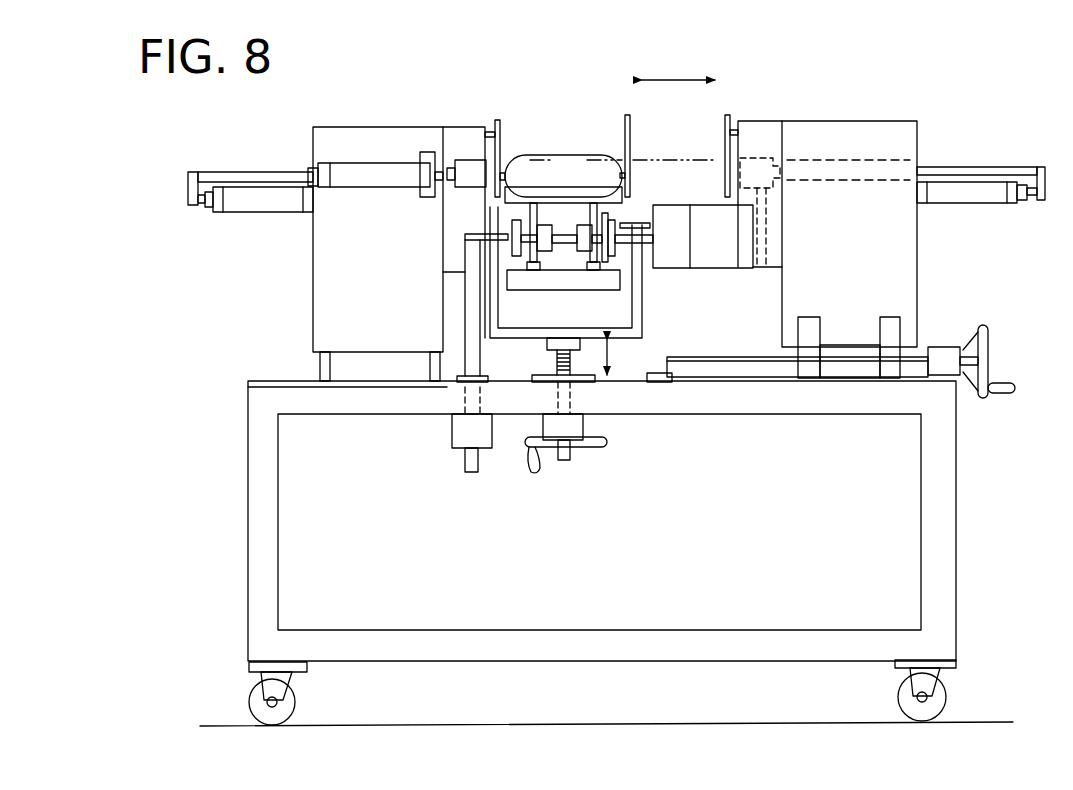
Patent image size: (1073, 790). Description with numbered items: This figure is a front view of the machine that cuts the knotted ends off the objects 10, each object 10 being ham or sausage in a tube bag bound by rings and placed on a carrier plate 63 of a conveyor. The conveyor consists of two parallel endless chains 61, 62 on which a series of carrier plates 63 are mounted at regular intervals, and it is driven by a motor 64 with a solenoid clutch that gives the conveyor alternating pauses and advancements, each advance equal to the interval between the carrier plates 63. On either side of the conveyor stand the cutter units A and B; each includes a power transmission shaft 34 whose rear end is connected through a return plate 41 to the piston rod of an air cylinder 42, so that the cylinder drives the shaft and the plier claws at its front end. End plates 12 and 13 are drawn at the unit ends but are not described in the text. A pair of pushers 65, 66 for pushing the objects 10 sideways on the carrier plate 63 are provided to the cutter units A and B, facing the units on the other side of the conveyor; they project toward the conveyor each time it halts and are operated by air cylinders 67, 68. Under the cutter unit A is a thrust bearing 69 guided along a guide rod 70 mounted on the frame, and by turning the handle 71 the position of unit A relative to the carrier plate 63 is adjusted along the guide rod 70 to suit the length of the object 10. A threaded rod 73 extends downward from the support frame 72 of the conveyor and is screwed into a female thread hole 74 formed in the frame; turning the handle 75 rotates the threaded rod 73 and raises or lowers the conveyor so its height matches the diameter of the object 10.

The object 10 is at (570, 172).
The end plate 12 is at (497, 120).
The end plate 13 is at (727, 113).
The power transmission shaft 34 is at (267, 171).
The return plate 41 is at (192, 172).
The air cylinder 42 is at (262, 212).
The endless chain 61 is at (537, 208).
The endless chain 62 is at (595, 200).
The carrier plate 63 is at (532, 193).
The motor 64 is at (707, 220).
The pusher 65 is at (758, 188).
The pusher 66 is at (470, 187).
The air cylinder 67 is at (847, 180).
The air cylinder 68 is at (388, 187).
The thrust bearing 69 is at (847, 353).
The guide rod 70 is at (743, 357).
The handle 71 is at (988, 336).
The support frame 72 is at (590, 332).
The threaded rod 73 is at (556, 357).
The female thread hole 74 is at (570, 400).
The handle 75 is at (607, 442).
The cutter unit A is at (880, 132).
The cutter unit B is at (348, 126).